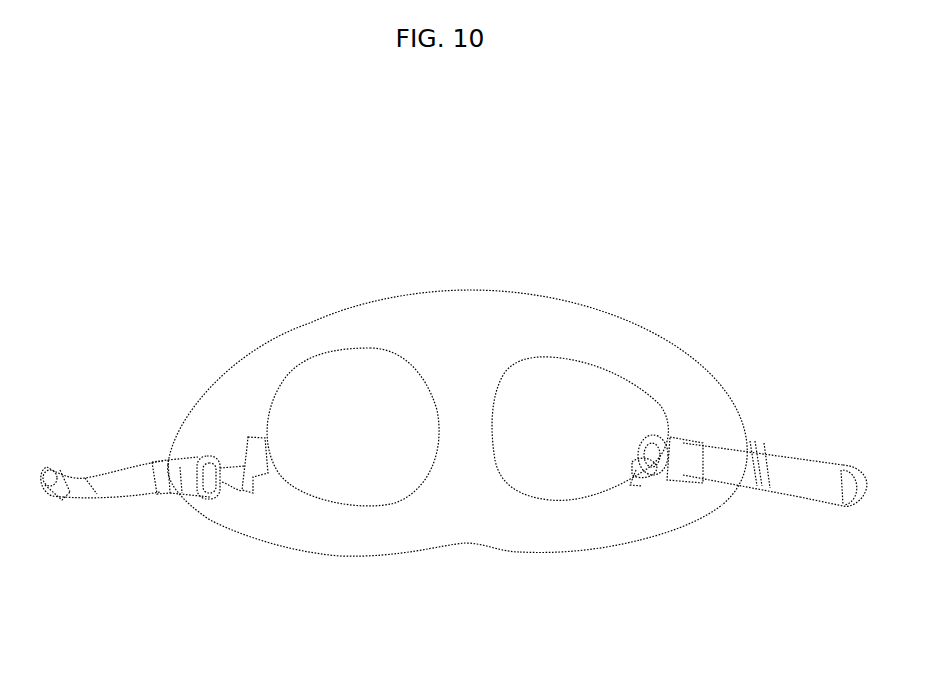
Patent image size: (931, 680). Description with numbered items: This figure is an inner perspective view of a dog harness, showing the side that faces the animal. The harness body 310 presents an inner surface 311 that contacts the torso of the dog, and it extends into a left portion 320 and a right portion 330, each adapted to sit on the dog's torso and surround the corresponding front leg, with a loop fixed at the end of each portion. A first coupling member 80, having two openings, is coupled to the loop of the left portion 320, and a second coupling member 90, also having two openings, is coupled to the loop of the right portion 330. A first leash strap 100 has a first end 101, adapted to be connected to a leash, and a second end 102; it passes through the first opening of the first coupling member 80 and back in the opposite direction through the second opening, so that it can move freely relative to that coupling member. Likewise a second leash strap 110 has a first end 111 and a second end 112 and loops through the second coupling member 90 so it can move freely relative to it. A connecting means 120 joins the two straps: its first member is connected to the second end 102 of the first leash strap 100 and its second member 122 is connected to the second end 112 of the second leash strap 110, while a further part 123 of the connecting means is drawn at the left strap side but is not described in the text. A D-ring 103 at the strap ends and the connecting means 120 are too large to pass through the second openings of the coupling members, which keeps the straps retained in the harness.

The first coupling member 80 is at (163, 485).
The second coupling member 90 is at (757, 490).
The first leash strap 100 is at (133, 478).
The first end of the first leash strap 101 is at (80, 480).
The second end of the first leash strap 102 is at (187, 470).
The D-ring 103 is at (52, 482).
The second leash strap 110 is at (785, 467).
The first end of the second leash strap 111 is at (829, 468).
The second end of the second leash strap 112 is at (697, 447).
The connecting means 120 is at (232, 470).
The second member of the connecting means 122 is at (647, 460).
The connector 123 is at (253, 475).
The harness body 310 is at (465, 543).
The inner surface 311 is at (518, 510).
The left portion 320 is at (243, 510).
The right portion 330 is at (662, 505).